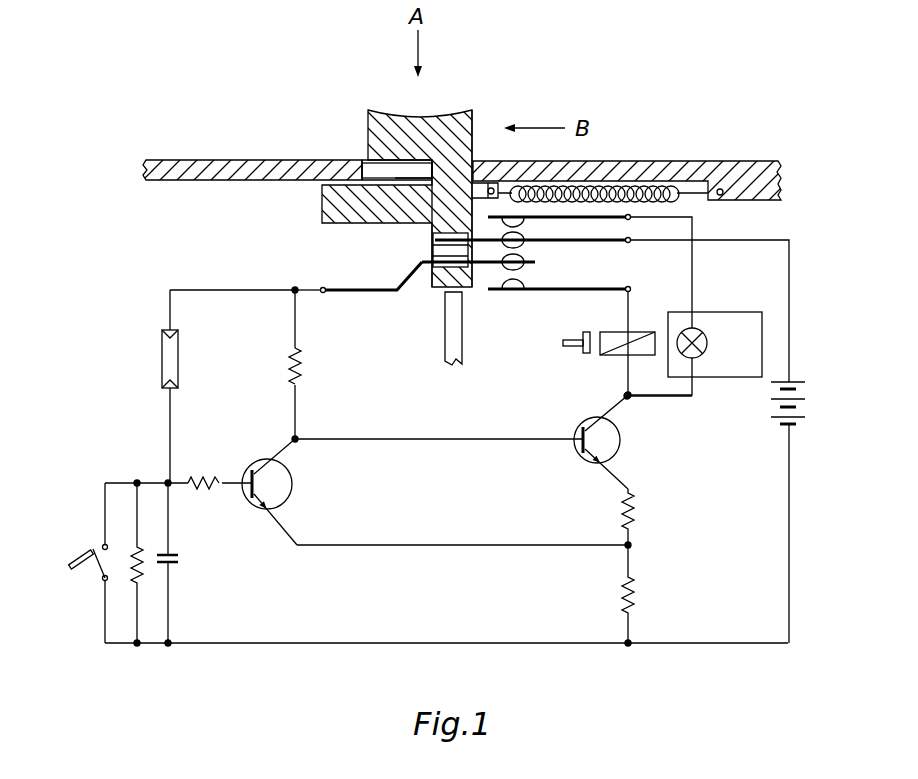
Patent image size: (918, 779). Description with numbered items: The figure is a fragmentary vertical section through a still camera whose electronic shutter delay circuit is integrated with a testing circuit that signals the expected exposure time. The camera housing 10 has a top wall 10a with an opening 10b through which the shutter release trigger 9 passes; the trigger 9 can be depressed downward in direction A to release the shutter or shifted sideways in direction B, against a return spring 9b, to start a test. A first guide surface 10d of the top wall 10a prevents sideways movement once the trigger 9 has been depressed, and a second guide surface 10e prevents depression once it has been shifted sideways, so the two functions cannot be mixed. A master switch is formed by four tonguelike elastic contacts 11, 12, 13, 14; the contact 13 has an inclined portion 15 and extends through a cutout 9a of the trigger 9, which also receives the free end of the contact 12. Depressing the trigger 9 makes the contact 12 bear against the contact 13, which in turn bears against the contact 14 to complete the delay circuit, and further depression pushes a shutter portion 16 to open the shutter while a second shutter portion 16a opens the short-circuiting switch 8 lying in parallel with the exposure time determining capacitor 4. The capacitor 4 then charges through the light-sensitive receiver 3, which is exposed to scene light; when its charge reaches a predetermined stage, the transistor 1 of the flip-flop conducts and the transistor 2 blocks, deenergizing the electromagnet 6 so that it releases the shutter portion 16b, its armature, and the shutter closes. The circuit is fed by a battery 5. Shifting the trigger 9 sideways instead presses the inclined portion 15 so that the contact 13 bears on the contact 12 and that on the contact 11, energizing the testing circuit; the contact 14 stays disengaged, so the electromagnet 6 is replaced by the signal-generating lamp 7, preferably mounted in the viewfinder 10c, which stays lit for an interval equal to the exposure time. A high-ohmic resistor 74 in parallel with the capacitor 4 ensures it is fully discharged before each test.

The transistor 1 is at (280, 480).
The transistor 2 is at (618, 442).
The light-sensitive receiver 3 is at (178, 350).
The exposure time determining capacitor 4 is at (178, 557).
The battery 5 is at (782, 420).
The electromagnet 6 is at (641, 332).
The signal-generating lamp 7 is at (707, 342).
The short-circuiting switch 8 is at (103, 545).
The resistor 74 is at (137, 545).
The shutter release trigger 9 is at (370, 128).
The aperture or cutout 9a is at (437, 248).
The return spring 9b is at (613, 190).
The housing 10 is at (217, 152).
The top wall 10a is at (745, 170).
The opening 10b is at (398, 168).
The viewfinder 10c is at (735, 312).
The first guide surface 10d is at (358, 176).
The second guide surface 10e is at (352, 162).
The contact 11 is at (538, 218).
The contact 12 is at (580, 240).
The contact 13 is at (536, 262).
The contact 14 is at (575, 295).
The inclined portion 15 is at (413, 270).
The shutter portion 16 is at (462, 333).
The second shutter portion 16a is at (82, 572).
The shutter portion 16b is at (583, 352).